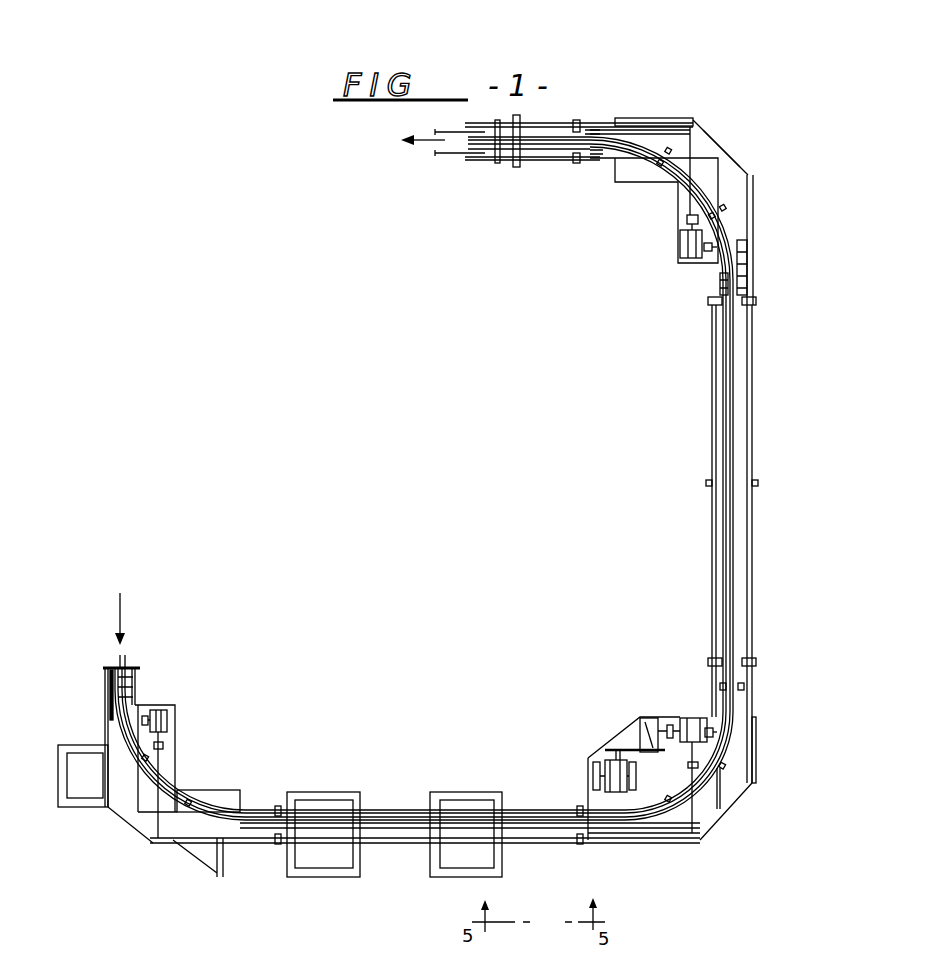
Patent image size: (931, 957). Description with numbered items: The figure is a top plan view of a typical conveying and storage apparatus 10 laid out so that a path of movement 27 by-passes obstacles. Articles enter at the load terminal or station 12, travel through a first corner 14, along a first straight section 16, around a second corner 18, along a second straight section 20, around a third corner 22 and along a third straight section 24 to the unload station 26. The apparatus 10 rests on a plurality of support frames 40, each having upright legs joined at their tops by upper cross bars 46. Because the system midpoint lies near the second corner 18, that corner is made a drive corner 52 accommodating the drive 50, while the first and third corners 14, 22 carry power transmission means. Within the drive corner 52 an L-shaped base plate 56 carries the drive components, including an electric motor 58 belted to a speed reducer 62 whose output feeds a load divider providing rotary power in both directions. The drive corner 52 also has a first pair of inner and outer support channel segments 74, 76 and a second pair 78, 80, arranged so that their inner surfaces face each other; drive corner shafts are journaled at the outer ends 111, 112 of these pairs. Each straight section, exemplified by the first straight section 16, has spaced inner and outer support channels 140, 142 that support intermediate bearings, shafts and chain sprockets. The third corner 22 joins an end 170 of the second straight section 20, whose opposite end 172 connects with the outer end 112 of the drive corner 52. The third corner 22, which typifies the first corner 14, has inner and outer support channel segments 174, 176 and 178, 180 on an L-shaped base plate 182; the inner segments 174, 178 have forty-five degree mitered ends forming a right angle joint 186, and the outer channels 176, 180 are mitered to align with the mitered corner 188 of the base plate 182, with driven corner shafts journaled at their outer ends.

The conveying and storage apparatus 10 is at (230, 786).
The load terminal or station 12 is at (108, 668).
The first corner 14 is at (140, 830).
The first straight section 16 is at (390, 847).
The second corner 18 is at (730, 813).
The second straight section 20 is at (752, 546).
The third corner 22 is at (730, 170).
The third straight section 24 is at (550, 122).
The unload station 26 is at (466, 158).
The path of movement 27 is at (428, 141).
The support frame 40 is at (440, 792).
The upper cross bar 46 is at (327, 877).
The drive 50 is at (595, 744).
The drive corner 52 is at (653, 716).
The L-shaped base plate 56 is at (587, 795).
The electric motor 58 is at (615, 790).
The speed reducer 62 is at (641, 717).
The inner support channel segment 74 is at (714, 817).
The outer support channel segment 76 is at (648, 840).
The inner support channel segment 78 is at (720, 782).
The outer support channel segment 80 is at (758, 775).
The outer end 111 is at (589, 847).
The outer end 112 is at (750, 672).
The inner support channel 140 is at (505, 808).
The outer support channel 142 is at (548, 843).
The end 170 is at (752, 322).
The opposite end 172 is at (753, 661).
The inner support channel segment 174 is at (713, 281).
The outer support channel segment 176 is at (750, 295).
The inner support channel segment 178 is at (614, 160).
The outer support channel segment 180 is at (642, 122).
The L-shaped base plate 182 is at (750, 175).
The right angle joint 186 is at (724, 148).
The mitered corner 188 is at (706, 128).